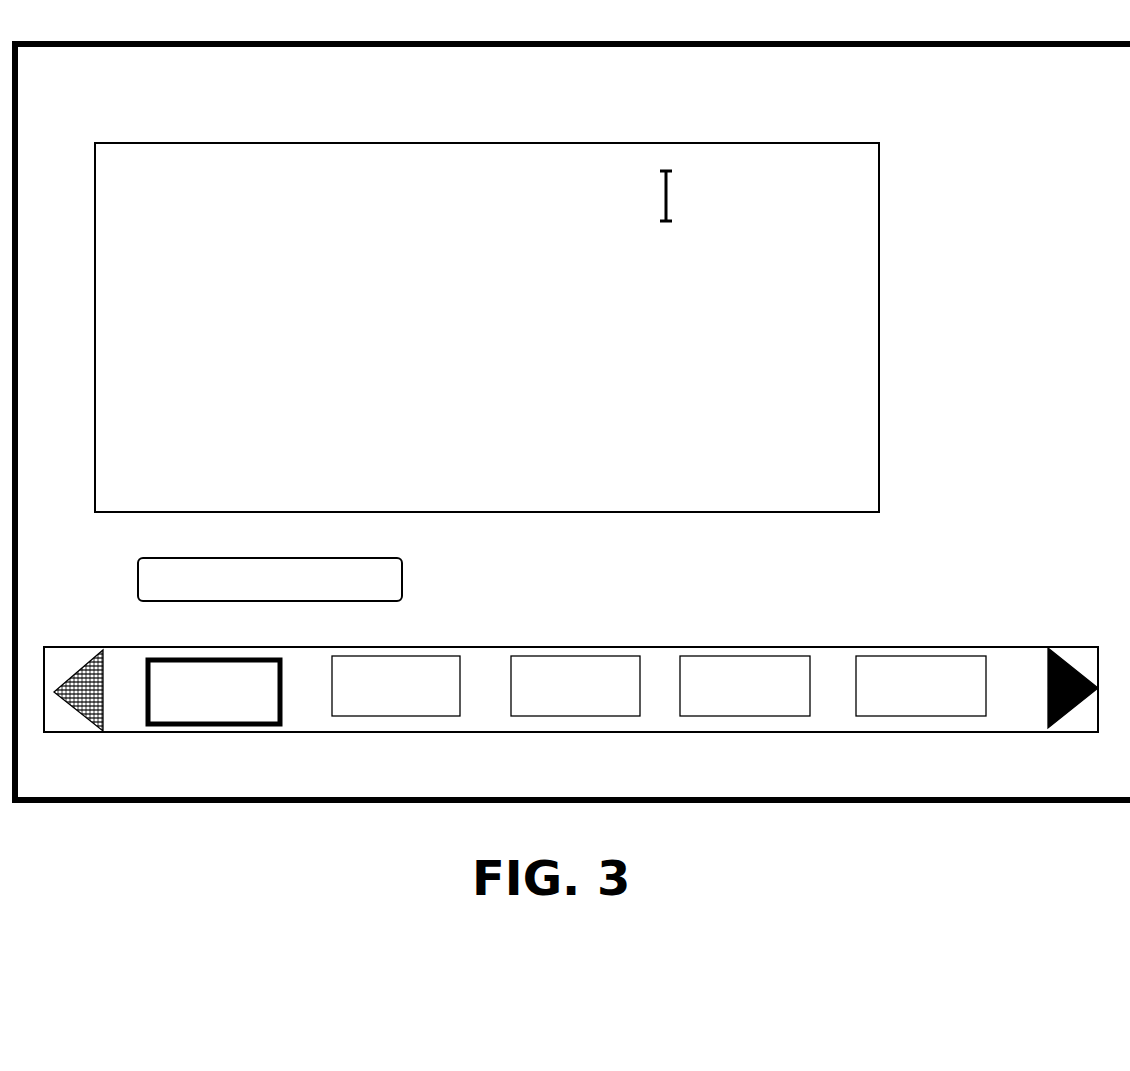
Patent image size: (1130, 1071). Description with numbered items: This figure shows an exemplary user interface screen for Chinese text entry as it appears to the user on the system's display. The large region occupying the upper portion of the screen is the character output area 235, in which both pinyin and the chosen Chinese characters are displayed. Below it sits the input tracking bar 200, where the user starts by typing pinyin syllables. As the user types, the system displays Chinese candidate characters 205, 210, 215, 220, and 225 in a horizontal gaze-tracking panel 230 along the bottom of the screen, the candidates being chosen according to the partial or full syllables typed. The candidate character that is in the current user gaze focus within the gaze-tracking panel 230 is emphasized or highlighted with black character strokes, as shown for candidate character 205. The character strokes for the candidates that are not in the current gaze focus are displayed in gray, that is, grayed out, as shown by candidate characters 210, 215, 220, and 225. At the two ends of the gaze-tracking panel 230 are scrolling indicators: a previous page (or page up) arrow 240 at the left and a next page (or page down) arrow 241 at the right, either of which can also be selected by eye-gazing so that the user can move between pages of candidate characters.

The input tracking bar 200 is at (412, 574).
The candidate character 205 is at (233, 727).
The candidate character 210 is at (405, 718).
The candidate character 215 is at (562, 718).
The candidate character 220 is at (745, 718).
The candidate character 225 is at (915, 718).
The gaze-tracking panel 230 is at (782, 642).
The character output area 235 is at (890, 241).
The previous page arrow 240 is at (80, 673).
The next page arrow 241 is at (1075, 660).